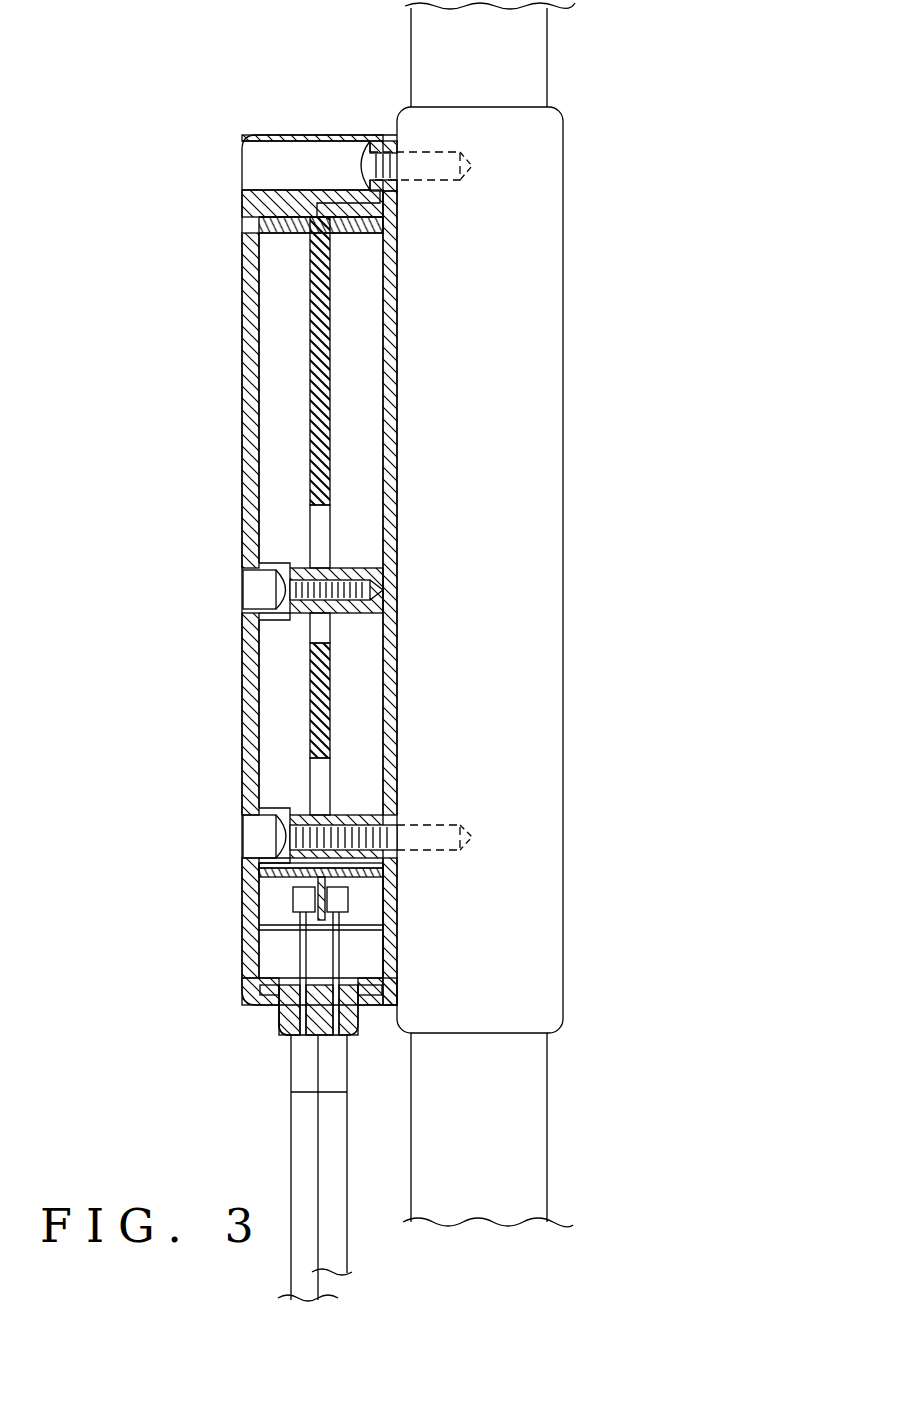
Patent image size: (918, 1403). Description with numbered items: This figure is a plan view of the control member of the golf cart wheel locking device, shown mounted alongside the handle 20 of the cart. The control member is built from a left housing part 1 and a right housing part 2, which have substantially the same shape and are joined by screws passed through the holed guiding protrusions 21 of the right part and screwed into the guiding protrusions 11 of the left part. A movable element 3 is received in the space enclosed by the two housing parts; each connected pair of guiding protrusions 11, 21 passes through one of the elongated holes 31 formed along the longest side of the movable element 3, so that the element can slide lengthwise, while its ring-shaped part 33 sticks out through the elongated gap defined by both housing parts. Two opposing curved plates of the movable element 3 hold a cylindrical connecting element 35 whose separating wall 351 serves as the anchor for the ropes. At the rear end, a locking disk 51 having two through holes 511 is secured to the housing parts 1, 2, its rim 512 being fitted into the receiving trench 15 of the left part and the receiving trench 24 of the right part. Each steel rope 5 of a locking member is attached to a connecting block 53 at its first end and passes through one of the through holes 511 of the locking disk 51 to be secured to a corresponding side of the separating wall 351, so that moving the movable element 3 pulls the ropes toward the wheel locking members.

The left housing part 1 is at (393, 322).
The right housing part 2 is at (243, 425).
The movable element 3 is at (330, 448).
The elongated holes 31 is at (320, 548).
The ring-shaped part 33 is at (313, 590).
The guiding protrusions 11 is at (365, 822).
The holed guiding protrusions 21 is at (257, 835).
The cylindrical connecting element 35 is at (268, 890).
The separating wall 351 is at (325, 892).
The connecting block 53 is at (300, 905).
The steel rope 5 is at (265, 965).
The receiving trench 15 is at (388, 955).
The receiving trench 24 is at (265, 990).
The rim 512 is at (385, 987).
The locking disk 51 is at (360, 1025).
The through holes 511 is at (280, 1017).
The handle 20 is at (560, 356).